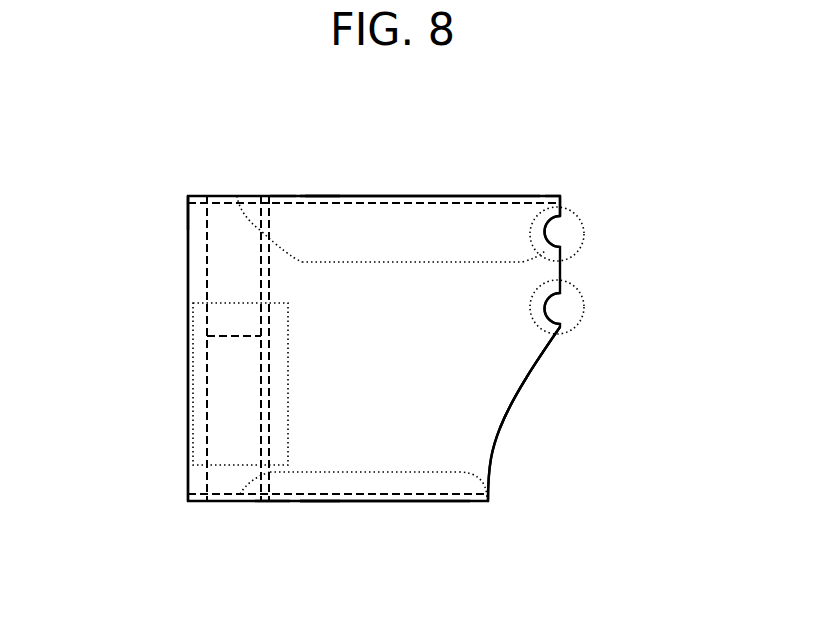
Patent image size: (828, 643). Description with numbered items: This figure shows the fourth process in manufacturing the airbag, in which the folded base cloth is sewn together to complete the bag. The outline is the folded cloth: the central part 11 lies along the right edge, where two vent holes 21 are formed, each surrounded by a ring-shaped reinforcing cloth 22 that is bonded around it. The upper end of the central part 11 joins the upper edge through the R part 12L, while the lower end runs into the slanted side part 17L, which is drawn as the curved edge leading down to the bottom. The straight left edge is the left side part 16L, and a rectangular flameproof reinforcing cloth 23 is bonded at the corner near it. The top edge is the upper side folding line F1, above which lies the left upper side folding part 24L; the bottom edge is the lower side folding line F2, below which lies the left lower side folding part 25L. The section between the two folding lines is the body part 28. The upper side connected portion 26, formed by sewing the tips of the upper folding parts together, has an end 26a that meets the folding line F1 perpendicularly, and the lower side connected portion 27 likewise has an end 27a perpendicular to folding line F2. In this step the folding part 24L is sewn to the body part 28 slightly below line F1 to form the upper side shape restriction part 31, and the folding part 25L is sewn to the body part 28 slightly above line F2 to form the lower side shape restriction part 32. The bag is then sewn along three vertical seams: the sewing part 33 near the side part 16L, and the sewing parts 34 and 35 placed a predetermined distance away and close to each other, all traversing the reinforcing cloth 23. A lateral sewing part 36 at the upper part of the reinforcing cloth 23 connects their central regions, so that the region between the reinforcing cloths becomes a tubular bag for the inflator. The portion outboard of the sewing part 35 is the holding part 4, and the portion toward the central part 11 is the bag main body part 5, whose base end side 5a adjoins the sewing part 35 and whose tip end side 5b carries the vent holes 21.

The holding part 4 is at (195, 218).
The bag main body part 5 is at (318, 457).
The base end side 5a is at (281, 218).
The tip end side 5b is at (562, 210).
The central part 11 is at (562, 270).
The R part 12L is at (563, 224).
The left side part 16L is at (188, 402).
The slanted side part 17L is at (515, 396).
The vent hole 21 is at (548, 318).
The ring-shaped reinforcing cloth 22 is at (603, 350).
The reinforcing cloth 23 is at (193, 445).
The left upper side folding part 24L is at (386, 215).
The left lower side folding part 25L is at (365, 480).
The upper side connected portion 26 is at (455, 265).
The end of upper side connected portion 26a is at (237, 196).
The lower side connected portion 27 is at (397, 470).
The end of lower side connected portion 27a is at (240, 494).
The body part 28 is at (463, 400).
The upper side shape restriction part 31 is at (503, 203).
The lower side shape restriction part 32 is at (475, 500).
The sewing part 33 is at (207, 237).
The sewing part 34 is at (262, 265).
The sewing part 35 is at (270, 283).
The lateral sewing part 36 is at (230, 336).
The upper side folding line F1 is at (322, 196).
The lower side folding line F2 is at (270, 505).